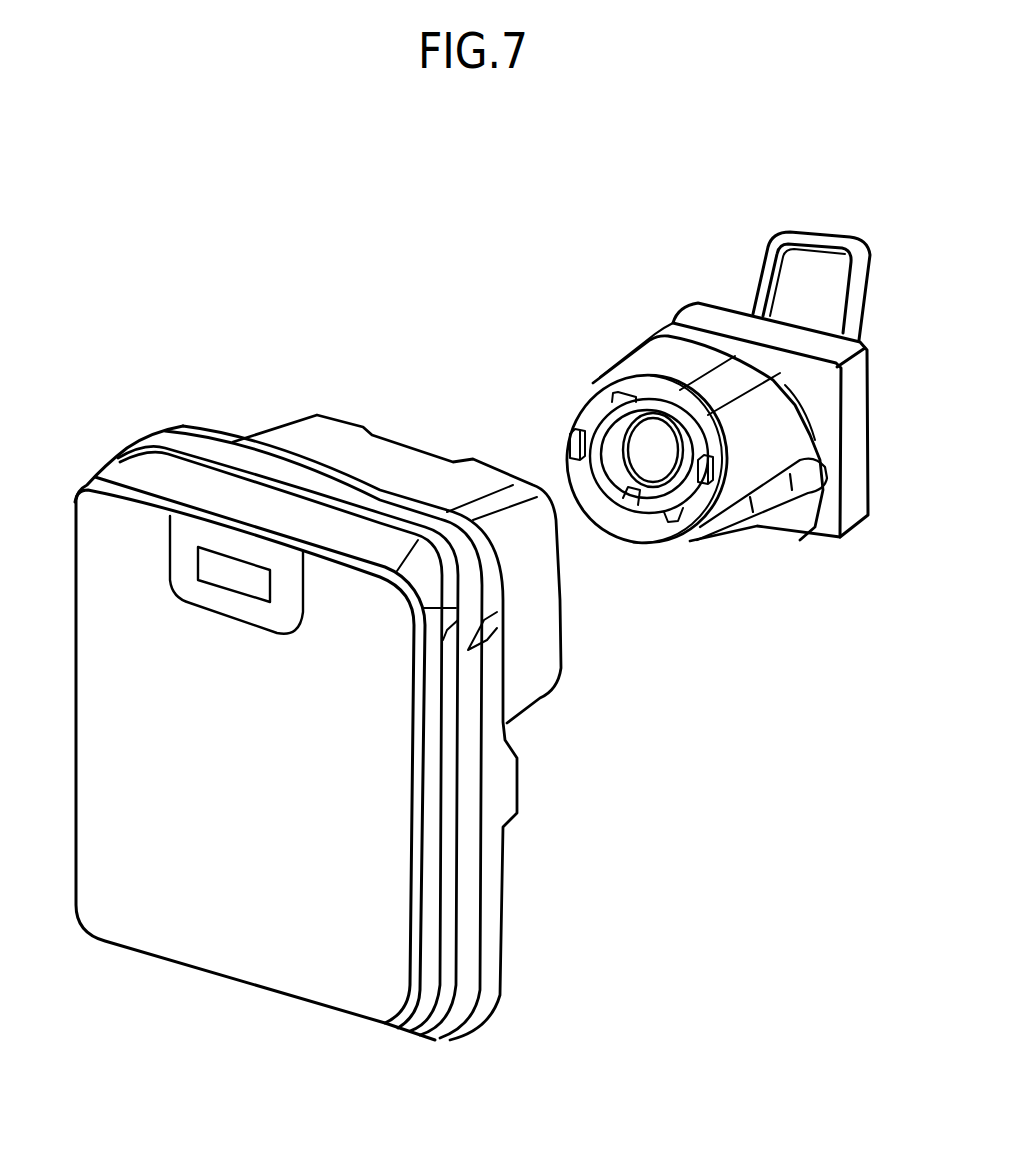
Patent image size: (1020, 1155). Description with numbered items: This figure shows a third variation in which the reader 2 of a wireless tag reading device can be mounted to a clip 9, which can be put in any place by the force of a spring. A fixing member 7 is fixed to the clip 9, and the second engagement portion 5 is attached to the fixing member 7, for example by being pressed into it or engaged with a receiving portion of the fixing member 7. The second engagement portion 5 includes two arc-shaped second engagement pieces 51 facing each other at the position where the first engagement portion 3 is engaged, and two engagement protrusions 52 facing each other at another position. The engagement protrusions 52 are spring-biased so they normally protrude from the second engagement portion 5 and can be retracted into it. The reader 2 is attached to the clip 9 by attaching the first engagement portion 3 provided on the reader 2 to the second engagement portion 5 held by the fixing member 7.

The reader 2 is at (197, 953).
The first engagement portion 3 is at (406, 460).
The second engagement portion 5 is at (661, 363).
The second engagement pieces 51 is at (640, 395).
The engagement protrusions 52 is at (570, 445).
The fixing member 7 is at (728, 317).
The clip 9 is at (812, 233).